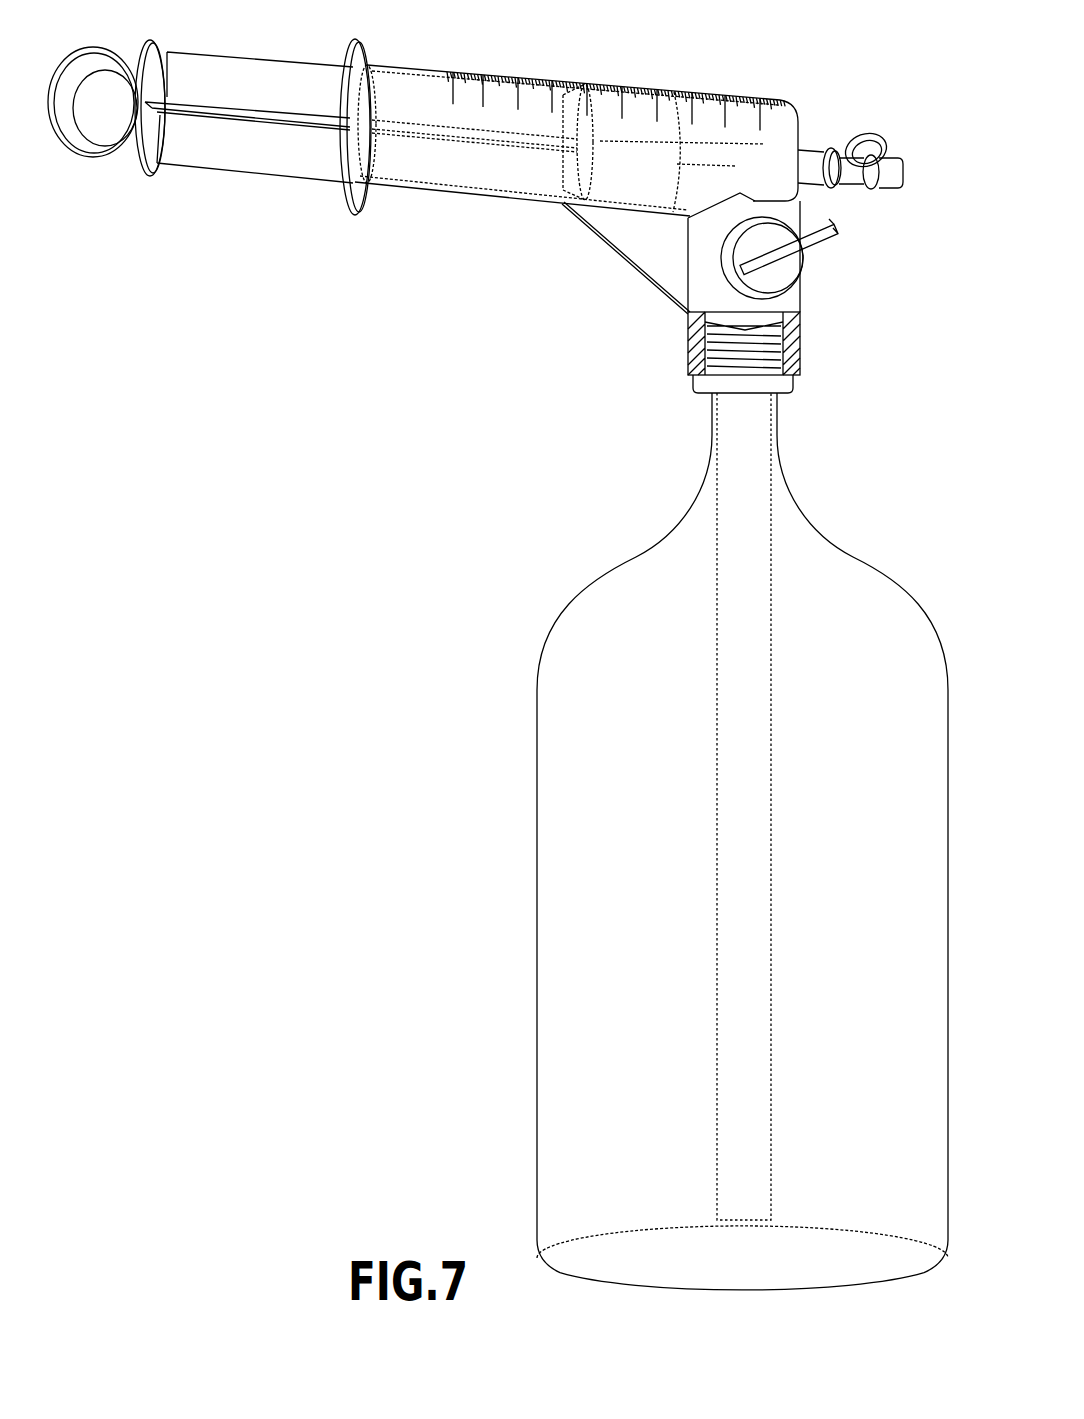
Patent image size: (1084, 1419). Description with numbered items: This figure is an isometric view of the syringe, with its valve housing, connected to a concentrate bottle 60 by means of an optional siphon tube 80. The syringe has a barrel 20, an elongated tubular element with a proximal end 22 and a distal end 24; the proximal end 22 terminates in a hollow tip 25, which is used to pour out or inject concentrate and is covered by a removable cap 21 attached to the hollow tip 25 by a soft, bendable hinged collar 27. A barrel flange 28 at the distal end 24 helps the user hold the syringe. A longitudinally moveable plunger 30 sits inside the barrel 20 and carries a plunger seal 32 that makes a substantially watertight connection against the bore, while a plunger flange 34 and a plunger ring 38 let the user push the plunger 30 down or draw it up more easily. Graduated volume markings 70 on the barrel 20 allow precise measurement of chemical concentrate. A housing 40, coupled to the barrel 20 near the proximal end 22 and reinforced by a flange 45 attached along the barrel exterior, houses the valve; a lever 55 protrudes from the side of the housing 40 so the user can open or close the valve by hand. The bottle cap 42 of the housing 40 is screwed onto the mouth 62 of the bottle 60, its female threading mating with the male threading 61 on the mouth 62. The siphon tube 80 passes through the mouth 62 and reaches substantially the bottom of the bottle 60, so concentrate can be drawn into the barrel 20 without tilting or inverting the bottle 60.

The barrel 20 is at (440, 197).
The removable cap 21 is at (887, 188).
The proximal end 22 is at (777, 100).
The distal end 24 is at (382, 63).
The hollow tip 25 is at (812, 150).
The hinged collar 27 is at (880, 133).
The barrel flange 28 is at (349, 215).
The plunger 30 is at (238, 163).
The plunger seal 32 is at (630, 84).
The plunger flange 34 is at (149, 177).
The plunger ring 38 is at (84, 148).
The housing 40 is at (698, 275).
The bottle cap 42 is at (687, 360).
The flange 45 is at (597, 223).
The lever 55 is at (823, 235).
The bottle 60 is at (537, 873).
The male threading 61 is at (717, 373).
The mouth 62 is at (800, 360).
The volume markings 70 is at (710, 95).
The siphon tube 80 is at (715, 543).